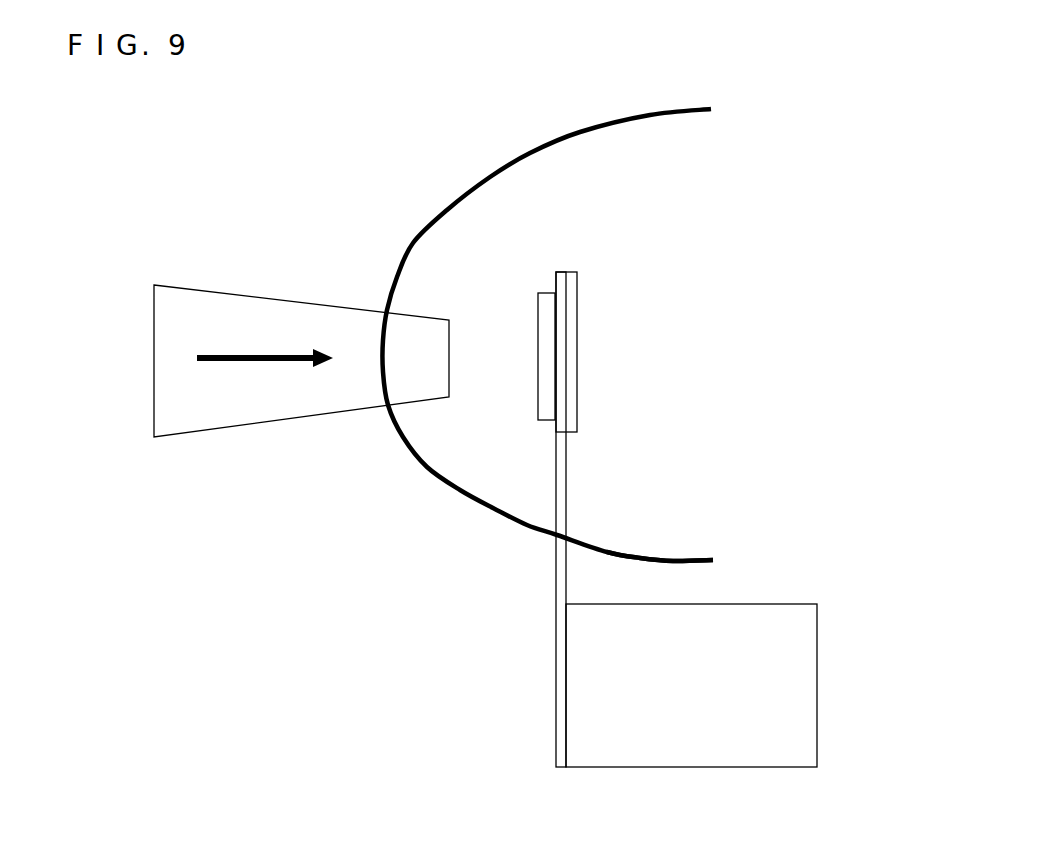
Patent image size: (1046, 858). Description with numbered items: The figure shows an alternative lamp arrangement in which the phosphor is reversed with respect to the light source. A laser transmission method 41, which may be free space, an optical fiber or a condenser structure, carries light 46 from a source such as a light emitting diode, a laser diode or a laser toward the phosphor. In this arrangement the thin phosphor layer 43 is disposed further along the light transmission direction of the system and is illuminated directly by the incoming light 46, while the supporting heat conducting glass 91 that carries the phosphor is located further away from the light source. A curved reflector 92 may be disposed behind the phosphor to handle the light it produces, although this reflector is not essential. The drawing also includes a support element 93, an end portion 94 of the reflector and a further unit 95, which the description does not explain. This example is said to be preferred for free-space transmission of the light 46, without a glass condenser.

The laser transmission method 41 is at (173, 295).
The light 46 is at (197, 358).
The reflector 92 is at (577, 271).
The supporting heat conducting glass 91 is at (560, 302).
The phosphor layer 43 is at (548, 395).
The substrate 93 is at (555, 578).
The reflector end portion 94 is at (693, 558).
The measurement unit 95 is at (787, 605).